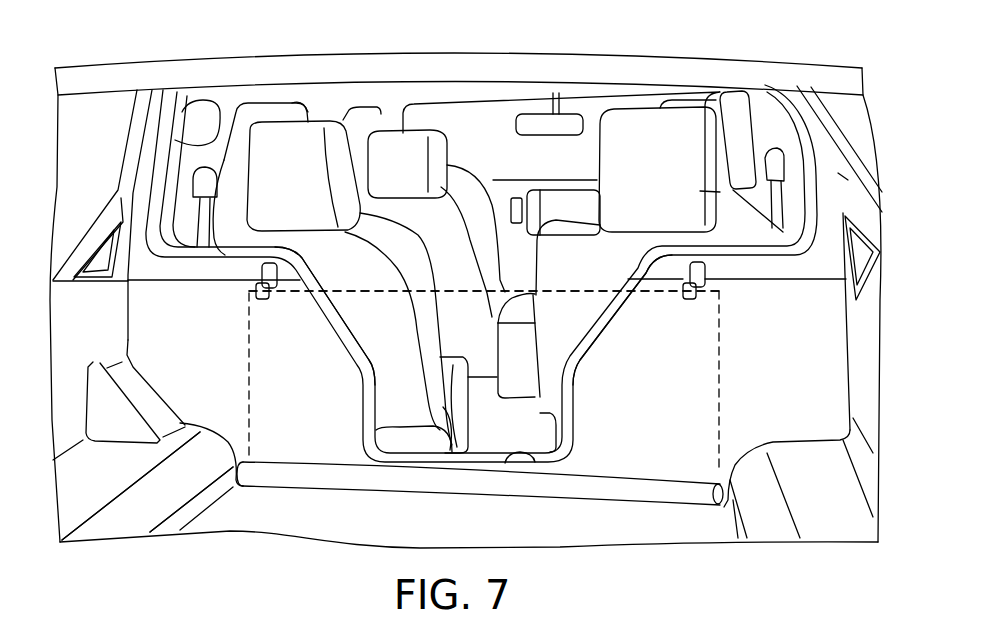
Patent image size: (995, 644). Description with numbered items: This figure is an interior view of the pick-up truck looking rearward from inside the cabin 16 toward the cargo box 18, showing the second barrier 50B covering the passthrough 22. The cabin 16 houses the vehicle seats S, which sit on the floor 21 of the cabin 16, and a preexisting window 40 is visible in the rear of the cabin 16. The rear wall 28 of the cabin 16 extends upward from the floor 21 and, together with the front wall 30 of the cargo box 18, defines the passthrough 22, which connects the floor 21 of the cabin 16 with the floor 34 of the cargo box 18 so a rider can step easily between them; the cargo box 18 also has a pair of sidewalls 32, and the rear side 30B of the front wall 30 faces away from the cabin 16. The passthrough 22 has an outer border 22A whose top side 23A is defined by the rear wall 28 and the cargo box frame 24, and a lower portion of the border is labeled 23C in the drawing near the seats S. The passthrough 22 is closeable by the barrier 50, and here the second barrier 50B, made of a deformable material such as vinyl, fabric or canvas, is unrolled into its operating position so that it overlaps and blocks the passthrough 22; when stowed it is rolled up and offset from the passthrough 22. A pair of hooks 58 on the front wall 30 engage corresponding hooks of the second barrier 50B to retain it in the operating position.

The cabin 16 is at (498, 95).
The cargo box 18 is at (92, 480).
The floor 21 is at (482, 443).
The passthrough 22 is at (332, 306).
The outer border 22A is at (640, 268).
The top side 23A is at (225, 253).
The seat cushion 23C is at (365, 398).
The cargo box frame 24 is at (143, 145).
The rear wall 28 is at (358, 340).
The front wall 30 is at (230, 377).
The rear side 30B is at (230, 413).
The sidewalls 32 is at (88, 323).
The floor 34 is at (363, 520).
The preexisting window 40 is at (200, 117).
The barrier 50 is at (447, 280).
The second barrier 50B is at (720, 392).
The hooks 58 is at (257, 267).
The vehicle seats S is at (272, 157).